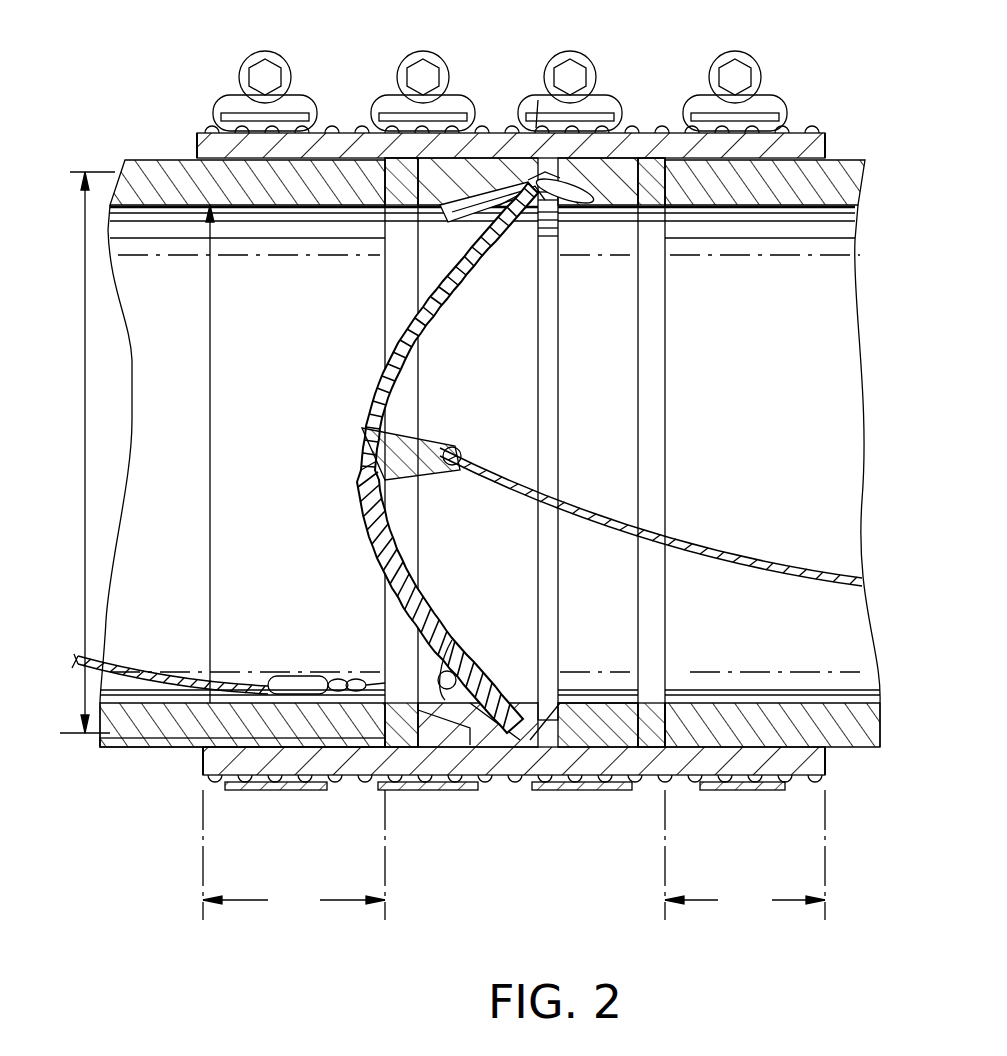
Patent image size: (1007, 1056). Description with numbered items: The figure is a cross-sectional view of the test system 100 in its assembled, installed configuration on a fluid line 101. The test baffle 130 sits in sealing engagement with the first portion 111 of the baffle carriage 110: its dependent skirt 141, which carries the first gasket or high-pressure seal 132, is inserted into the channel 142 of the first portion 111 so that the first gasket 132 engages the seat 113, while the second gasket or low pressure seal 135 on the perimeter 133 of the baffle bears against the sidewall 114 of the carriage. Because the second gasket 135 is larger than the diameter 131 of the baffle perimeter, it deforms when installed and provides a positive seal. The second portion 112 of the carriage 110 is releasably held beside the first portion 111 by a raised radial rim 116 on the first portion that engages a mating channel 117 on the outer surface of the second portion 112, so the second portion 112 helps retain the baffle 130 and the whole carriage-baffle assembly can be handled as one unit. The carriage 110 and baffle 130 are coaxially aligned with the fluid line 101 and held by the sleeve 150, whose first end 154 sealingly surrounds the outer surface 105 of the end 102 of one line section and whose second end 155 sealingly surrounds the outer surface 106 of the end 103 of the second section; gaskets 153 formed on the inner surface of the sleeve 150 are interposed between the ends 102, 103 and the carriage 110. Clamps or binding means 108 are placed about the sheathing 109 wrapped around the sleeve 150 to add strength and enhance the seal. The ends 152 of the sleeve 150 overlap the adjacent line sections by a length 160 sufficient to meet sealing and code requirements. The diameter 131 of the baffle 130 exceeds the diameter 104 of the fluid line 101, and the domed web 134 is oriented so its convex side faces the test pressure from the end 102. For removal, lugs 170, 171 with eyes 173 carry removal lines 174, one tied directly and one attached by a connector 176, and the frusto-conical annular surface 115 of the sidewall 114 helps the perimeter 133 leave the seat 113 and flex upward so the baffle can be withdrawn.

The test system 100 is at (596, 825).
The fluid line 101 is at (120, 750).
The end of one section of fluid line 102 is at (150, 750).
The end of second section of fluid line 103 is at (862, 752).
The diameter of fluid line 104 is at (319, 431).
The outer surface of end 102 105 is at (180, 750).
The outer surface of end 103 106 is at (860, 165).
The clamps or binding means 108 is at (408, 52).
The sheathing 109 is at (795, 130).
The baffle carriage 110 is at (584, 456).
The first portion of baffle carriage 111 is at (665, 703).
The second portion of baffle carriage 112 is at (385, 776).
The seat 113 is at (577, 690).
The sidewall of carriage 114 is at (527, 178).
The frusto-conical annular surface 115 is at (472, 776).
The raised radial rim 116 is at (510, 178).
The mating channel 117 is at (445, 215).
The test baffle 130 is at (412, 355).
The diameter of baffle 131 is at (87, 452).
The first gasket or high-pressure seal 132 is at (600, 720).
The perimeter of baffle 133 is at (525, 195).
The web 134 is at (366, 430).
The second gasket or low pressure seal 135 is at (612, 120).
The dependent skirt 141 is at (562, 215).
The channel 142 is at (600, 207).
The sleeve 150 is at (542, 813).
The ends of sleeve 152 is at (205, 776).
The gaskets 153 is at (400, 207).
The first end of sleeve 154 is at (197, 142).
The second end of sleeve 155 is at (828, 142).
The length 160 is at (514, 855).
The lug 170 is at (438, 442).
The lug 171 is at (450, 648).
The eyes 173 is at (462, 452).
The removal line 174 is at (768, 562).
The connector 176 is at (400, 676).